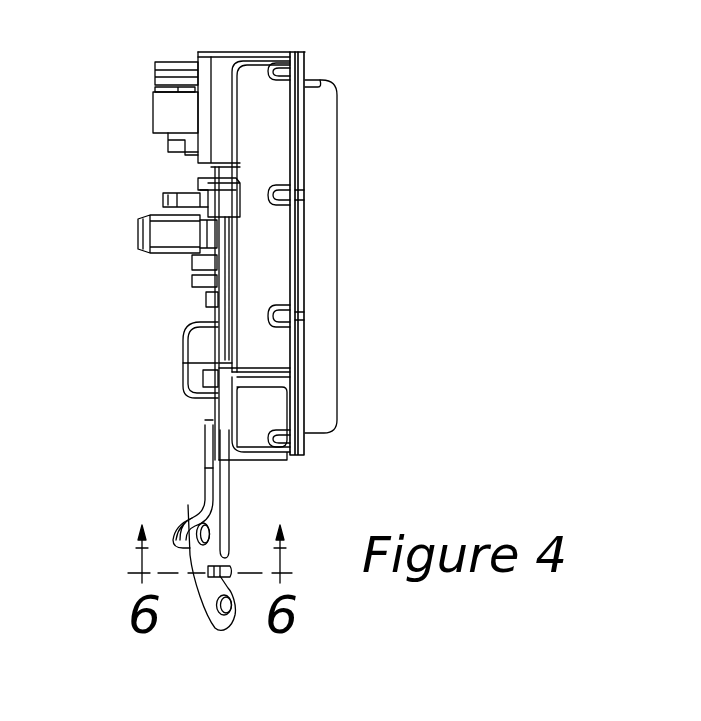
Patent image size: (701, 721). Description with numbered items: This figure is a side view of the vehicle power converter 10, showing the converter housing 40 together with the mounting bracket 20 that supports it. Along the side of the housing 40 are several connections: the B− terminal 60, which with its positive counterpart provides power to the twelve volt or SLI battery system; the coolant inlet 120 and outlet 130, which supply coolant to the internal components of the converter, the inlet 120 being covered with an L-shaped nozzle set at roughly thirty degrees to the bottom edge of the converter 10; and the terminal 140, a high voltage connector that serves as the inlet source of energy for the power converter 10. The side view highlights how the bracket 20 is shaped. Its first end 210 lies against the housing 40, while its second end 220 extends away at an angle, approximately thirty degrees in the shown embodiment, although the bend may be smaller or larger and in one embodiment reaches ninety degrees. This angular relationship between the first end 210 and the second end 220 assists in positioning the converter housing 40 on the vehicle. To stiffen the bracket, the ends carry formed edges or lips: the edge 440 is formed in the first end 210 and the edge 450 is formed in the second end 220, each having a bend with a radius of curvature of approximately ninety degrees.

The power converter 10 is at (398, 134).
The mounting bracket 20 is at (220, 507).
The converter housing 40 is at (320, 86).
The B− terminal 60 is at (163, 202).
The inlet 120 is at (190, 348).
The outlet 130 is at (147, 253).
The terminal 140 is at (160, 112).
The first end 210 is at (210, 467).
The second end 220 is at (208, 594).
The edge 440 is at (187, 517).
The edge 450 is at (227, 537).